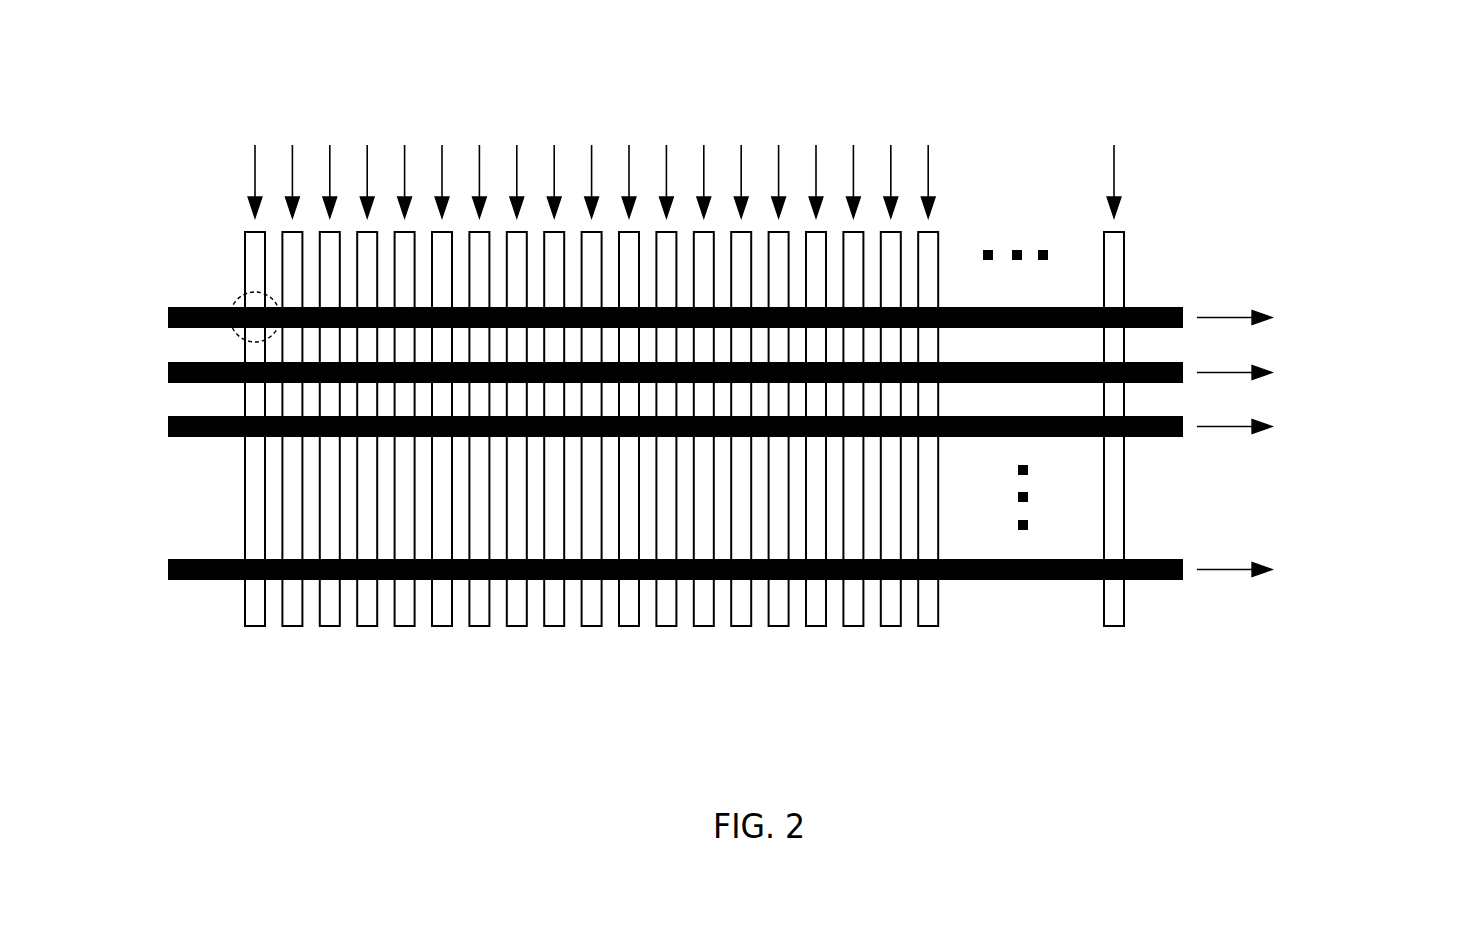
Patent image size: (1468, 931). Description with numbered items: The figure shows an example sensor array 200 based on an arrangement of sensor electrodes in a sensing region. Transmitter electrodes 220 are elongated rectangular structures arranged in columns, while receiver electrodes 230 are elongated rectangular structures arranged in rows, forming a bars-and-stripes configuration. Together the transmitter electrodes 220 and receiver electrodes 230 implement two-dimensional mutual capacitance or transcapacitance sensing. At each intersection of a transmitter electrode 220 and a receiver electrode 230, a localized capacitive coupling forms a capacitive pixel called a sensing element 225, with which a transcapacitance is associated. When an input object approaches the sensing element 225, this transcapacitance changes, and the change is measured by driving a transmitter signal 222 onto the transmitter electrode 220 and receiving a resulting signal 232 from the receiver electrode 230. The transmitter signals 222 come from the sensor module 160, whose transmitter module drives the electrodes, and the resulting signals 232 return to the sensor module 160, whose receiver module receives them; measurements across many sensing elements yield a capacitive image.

The sensor array 200 is at (767, 412).
The transmitter electrodes 220 is at (1125, 651).
The transmitter signal 222 is at (675, 125).
The sensing element 225 is at (191, 236).
The receiver electrodes 230 is at (158, 289).
The resulting signal 232 is at (1273, 598).
The sensor module 160 is at (666, 74).